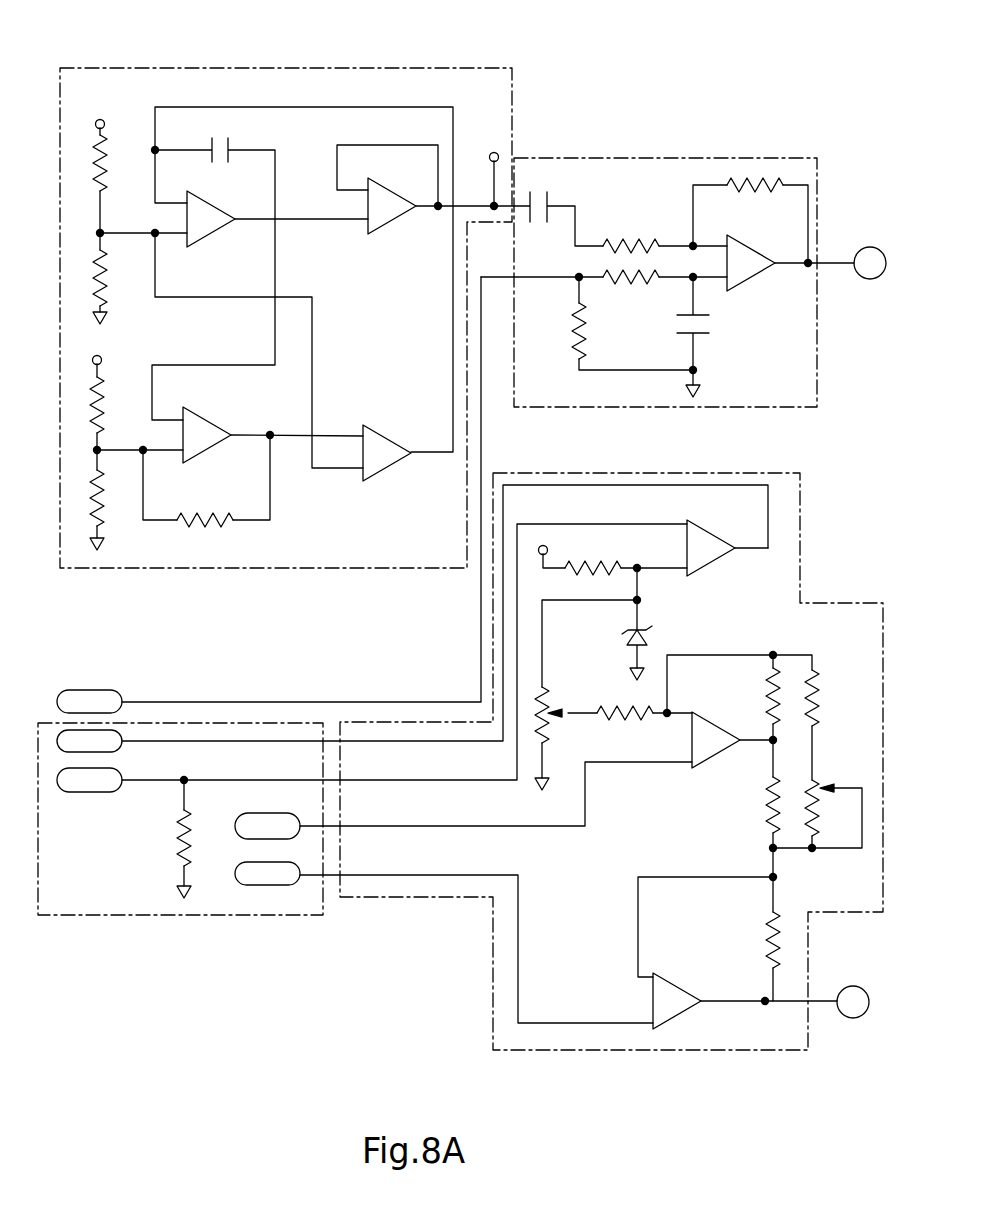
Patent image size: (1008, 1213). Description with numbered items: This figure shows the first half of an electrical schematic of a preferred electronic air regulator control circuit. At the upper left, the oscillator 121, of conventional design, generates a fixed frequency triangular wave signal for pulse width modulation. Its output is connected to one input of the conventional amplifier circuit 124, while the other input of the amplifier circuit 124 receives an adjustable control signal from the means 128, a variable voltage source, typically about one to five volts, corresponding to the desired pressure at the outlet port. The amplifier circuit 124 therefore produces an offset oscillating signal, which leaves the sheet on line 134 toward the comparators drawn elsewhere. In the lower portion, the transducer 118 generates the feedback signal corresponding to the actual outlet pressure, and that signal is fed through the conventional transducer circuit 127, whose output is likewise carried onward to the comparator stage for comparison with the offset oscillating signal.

The oscillator 121 is at (217, 68).
The amplifier circuit 124 is at (622, 158).
The transducer circuit 127 is at (778, 1053).
The transducer 118 is at (160, 917).
The means providing an adjustable control signal 128 is at (269, 496).
The line 134 is at (833, 262).